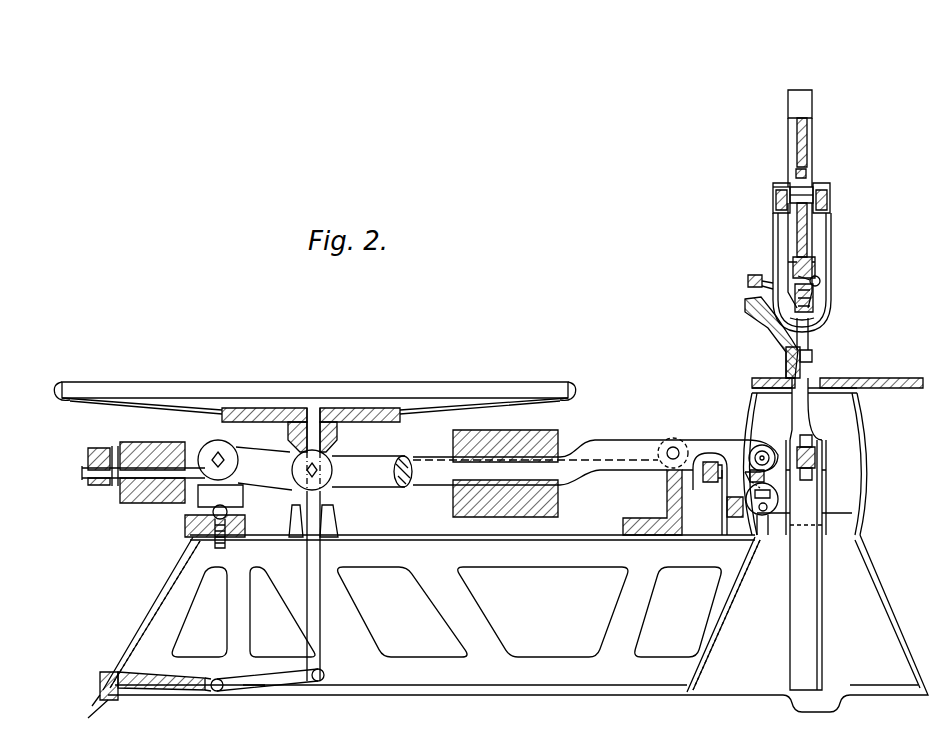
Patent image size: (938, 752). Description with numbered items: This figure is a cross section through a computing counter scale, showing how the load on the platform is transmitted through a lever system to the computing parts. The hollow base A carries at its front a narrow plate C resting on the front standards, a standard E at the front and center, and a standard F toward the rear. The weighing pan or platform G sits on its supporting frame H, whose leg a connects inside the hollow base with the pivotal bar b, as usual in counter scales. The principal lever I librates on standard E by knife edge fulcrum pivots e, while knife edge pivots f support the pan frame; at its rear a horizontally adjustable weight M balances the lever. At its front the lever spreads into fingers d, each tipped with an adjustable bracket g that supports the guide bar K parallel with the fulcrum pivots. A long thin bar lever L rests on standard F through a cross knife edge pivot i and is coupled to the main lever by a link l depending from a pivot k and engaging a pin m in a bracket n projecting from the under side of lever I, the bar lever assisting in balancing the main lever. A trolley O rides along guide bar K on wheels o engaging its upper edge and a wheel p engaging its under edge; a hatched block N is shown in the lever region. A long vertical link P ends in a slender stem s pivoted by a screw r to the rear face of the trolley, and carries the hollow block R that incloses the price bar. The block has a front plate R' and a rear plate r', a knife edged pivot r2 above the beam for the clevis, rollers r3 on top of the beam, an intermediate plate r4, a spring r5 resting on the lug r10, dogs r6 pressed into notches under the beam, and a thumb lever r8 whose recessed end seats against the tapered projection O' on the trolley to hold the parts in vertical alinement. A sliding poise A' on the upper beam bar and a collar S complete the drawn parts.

The hollow base A is at (508, 626).
The sliding poise A' is at (801, 114).
The narrow plate C is at (905, 390).
The standard E is at (245, 490).
The standard F is at (662, 540).
The weighing pan G is at (327, 385).
The supporting frame H is at (352, 422).
The lever I is at (112, 455).
The guide bar K is at (805, 456).
The bar lever L is at (623, 440).
The adjustable weight M is at (163, 505).
The guide block N is at (556, 497).
The trolley O is at (816, 478).
The projection O' is at (753, 337).
The vertical link P is at (831, 265).
The hollow block R is at (771, 255).
The front plate R' is at (758, 257).
The collar S is at (818, 198).
The leg a is at (321, 549).
The pivotal bar b is at (243, 678).
The fingers d is at (722, 440).
The knife edge fulcrum pivots e is at (216, 458).
The knife edge pivots f is at (308, 470).
The bracket g is at (752, 460).
The cross knife edge pivot i is at (675, 446).
The pivot k is at (766, 446).
The link l is at (789, 540).
The pin m is at (750, 522).
The bracket n is at (726, 508).
The wheels o is at (823, 463).
The wheel p is at (804, 468).
The screw r is at (821, 348).
The rear plate r' is at (826, 187).
The knife edged pivot r2 is at (773, 187).
The rollers r3 is at (792, 195).
The plate r4 is at (816, 262).
The spring r5 is at (813, 297).
The dogs r6 is at (818, 254).
The thumb lever r8 is at (748, 281).
The lug r10 is at (823, 322).
The slender stem s is at (786, 340).